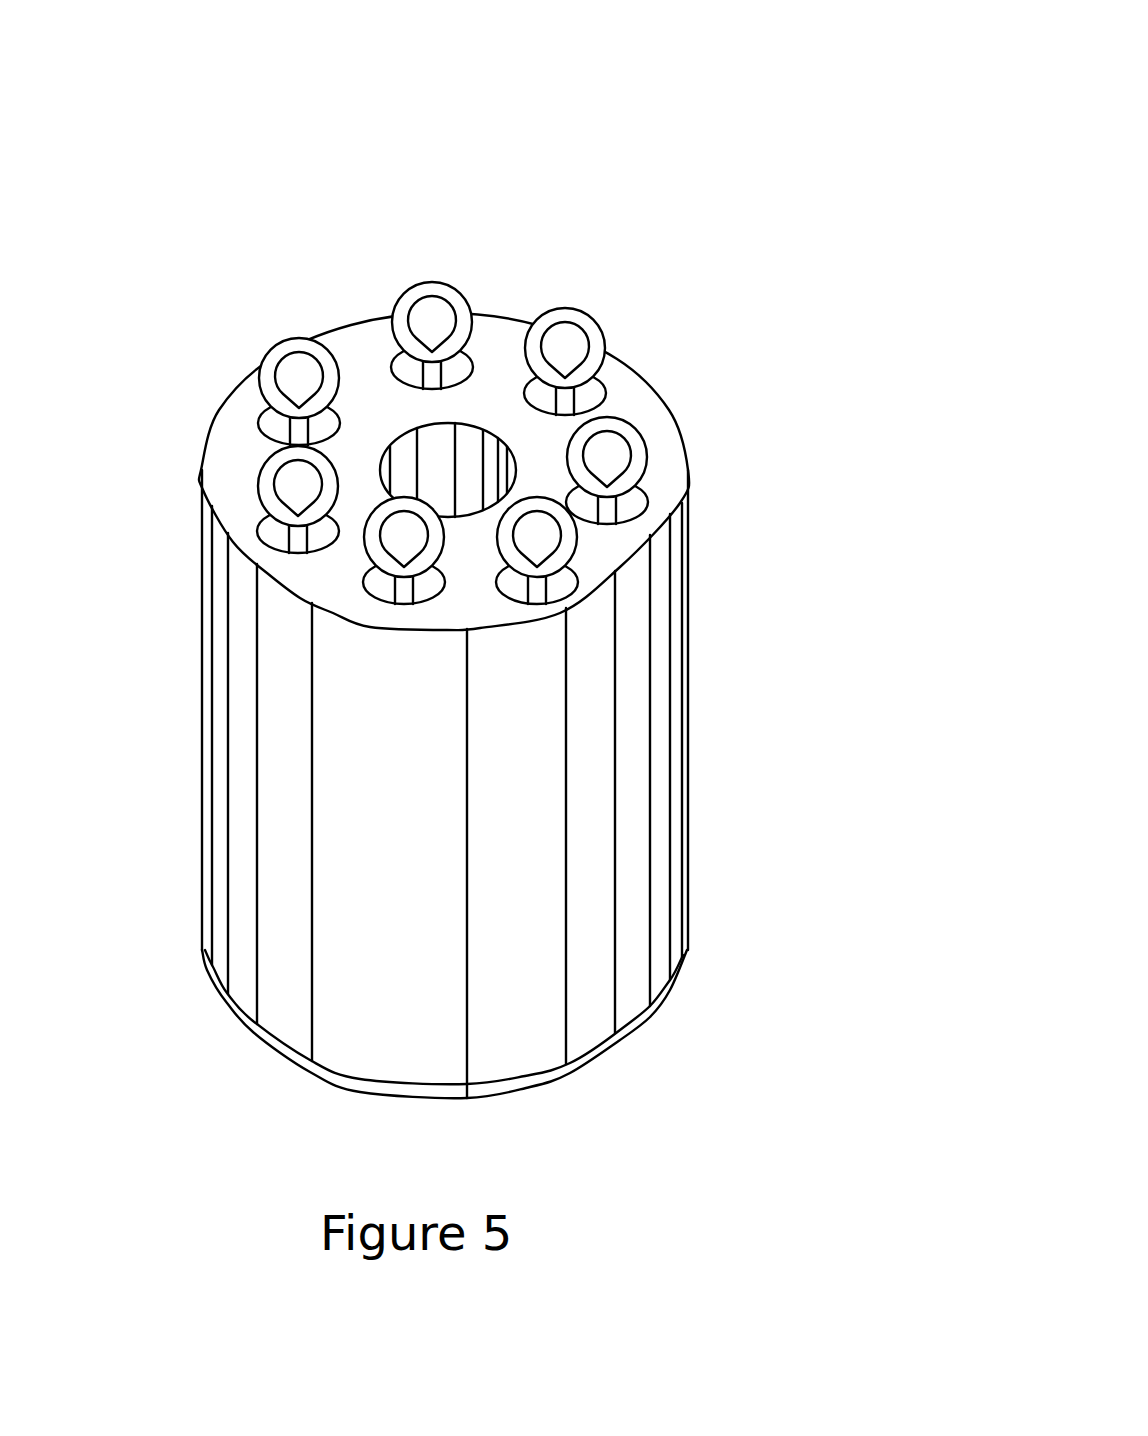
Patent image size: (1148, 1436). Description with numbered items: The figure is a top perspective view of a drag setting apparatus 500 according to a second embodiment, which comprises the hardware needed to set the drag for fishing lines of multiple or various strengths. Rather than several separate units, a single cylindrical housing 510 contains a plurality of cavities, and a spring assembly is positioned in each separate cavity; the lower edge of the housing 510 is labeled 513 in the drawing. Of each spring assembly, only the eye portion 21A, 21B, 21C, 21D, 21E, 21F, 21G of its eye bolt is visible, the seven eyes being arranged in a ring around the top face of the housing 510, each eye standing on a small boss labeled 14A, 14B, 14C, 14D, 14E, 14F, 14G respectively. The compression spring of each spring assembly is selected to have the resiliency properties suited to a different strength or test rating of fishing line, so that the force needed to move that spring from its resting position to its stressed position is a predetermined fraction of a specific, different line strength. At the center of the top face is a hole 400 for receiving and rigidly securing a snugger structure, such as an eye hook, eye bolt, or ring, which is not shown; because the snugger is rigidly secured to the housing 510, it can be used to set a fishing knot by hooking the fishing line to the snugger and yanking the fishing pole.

The drag setting apparatus 500 is at (793, 170).
The housing 510 is at (690, 760).
The bottom rim of housing 513 is at (640, 1026).
The hole 400 is at (473, 422).
The eye portion 21A is at (590, 328).
The eye portion 21B is at (643, 440).
The eye portion 21C is at (575, 548).
The eye portion 21D is at (372, 560).
The eye portion 21E is at (258, 486).
The eye portion 21F is at (283, 338).
The eye portion 21G is at (432, 282).
The base post A 14A is at (603, 392).
The base post B 14B is at (632, 492).
The base post C 14C is at (575, 594).
The base post D 14D is at (395, 590).
The base post E 14E is at (258, 528).
The base post F 14F is at (262, 422).
The base post G 14G is at (396, 366).